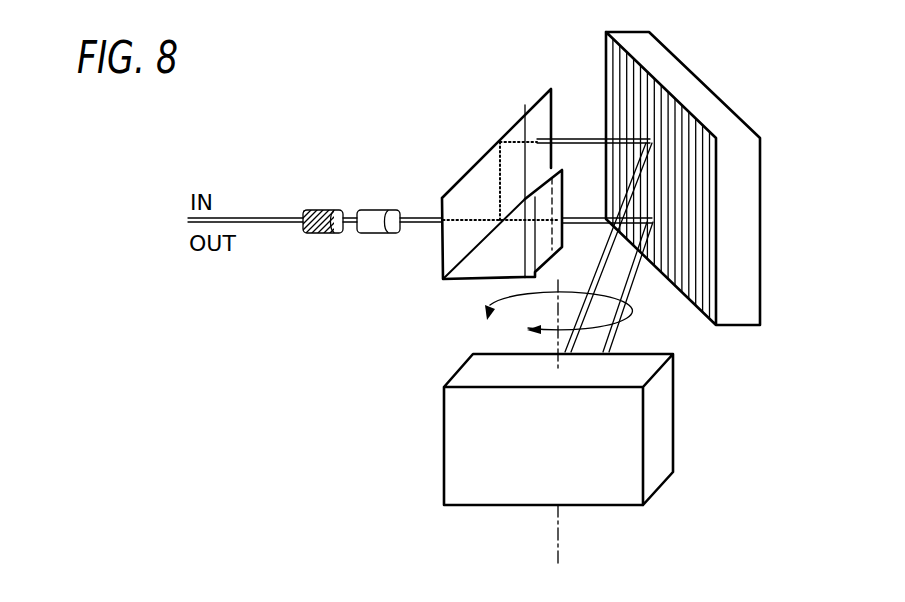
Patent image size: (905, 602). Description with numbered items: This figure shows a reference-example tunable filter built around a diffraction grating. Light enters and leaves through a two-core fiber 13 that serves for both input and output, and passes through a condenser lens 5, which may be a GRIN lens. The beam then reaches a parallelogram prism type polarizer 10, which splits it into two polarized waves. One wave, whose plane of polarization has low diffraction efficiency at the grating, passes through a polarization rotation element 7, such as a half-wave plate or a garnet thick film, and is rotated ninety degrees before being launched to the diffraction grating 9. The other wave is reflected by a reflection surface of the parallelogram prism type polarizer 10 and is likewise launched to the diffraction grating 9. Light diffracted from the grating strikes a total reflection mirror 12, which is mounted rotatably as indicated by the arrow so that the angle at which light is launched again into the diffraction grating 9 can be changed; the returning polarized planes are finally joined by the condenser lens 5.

The condenser lens 5 is at (378, 210).
The polarization rotation element 7 is at (554, 256).
The diffraction grating 9 is at (719, 97).
The parallelogram prism type polarizer 10 is at (468, 171).
The total reflection mirror 12 is at (674, 413).
The two-core fiber 13 is at (328, 210).